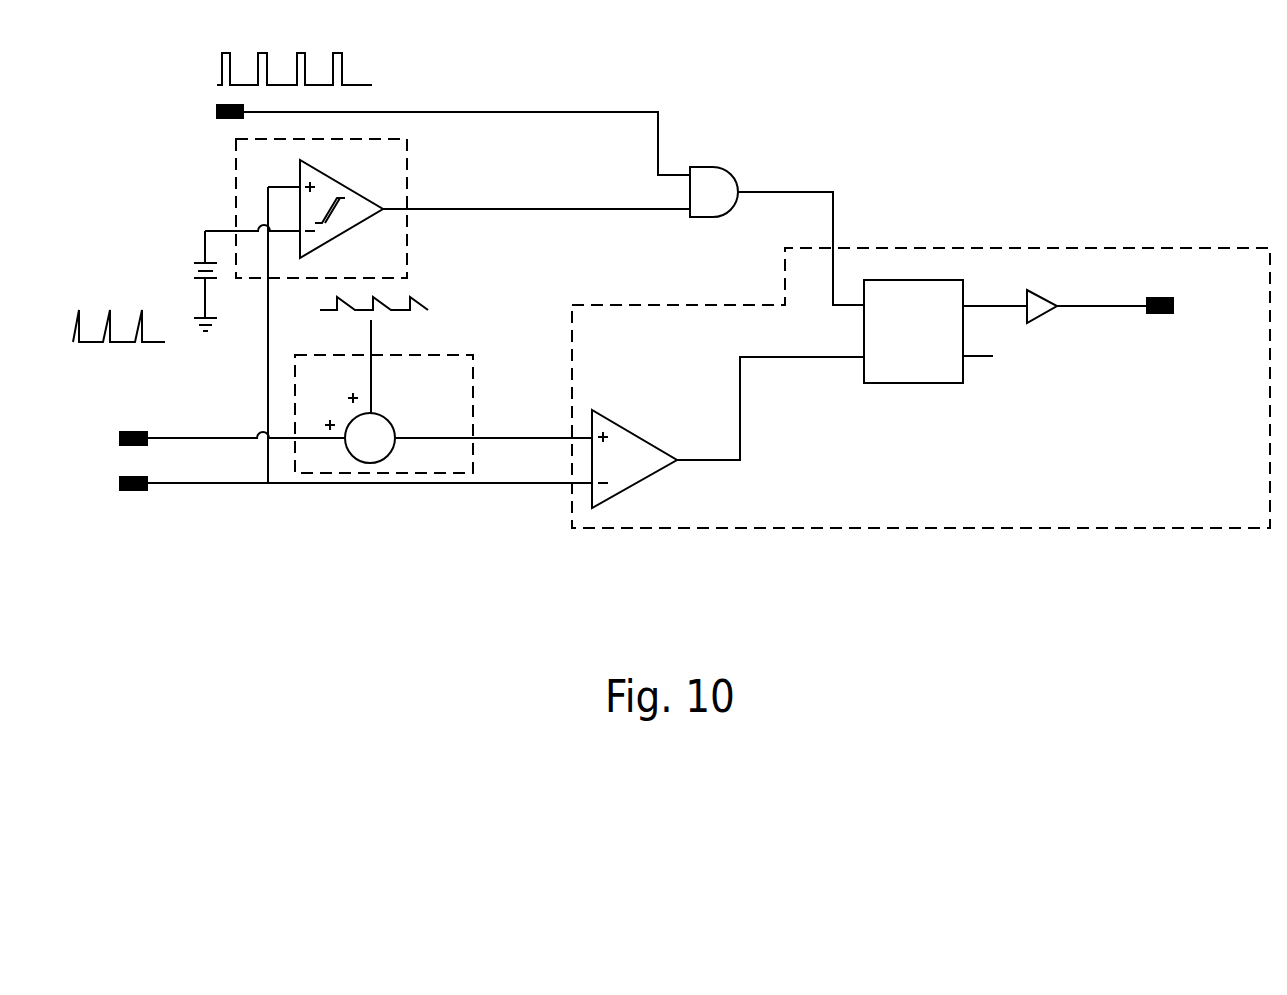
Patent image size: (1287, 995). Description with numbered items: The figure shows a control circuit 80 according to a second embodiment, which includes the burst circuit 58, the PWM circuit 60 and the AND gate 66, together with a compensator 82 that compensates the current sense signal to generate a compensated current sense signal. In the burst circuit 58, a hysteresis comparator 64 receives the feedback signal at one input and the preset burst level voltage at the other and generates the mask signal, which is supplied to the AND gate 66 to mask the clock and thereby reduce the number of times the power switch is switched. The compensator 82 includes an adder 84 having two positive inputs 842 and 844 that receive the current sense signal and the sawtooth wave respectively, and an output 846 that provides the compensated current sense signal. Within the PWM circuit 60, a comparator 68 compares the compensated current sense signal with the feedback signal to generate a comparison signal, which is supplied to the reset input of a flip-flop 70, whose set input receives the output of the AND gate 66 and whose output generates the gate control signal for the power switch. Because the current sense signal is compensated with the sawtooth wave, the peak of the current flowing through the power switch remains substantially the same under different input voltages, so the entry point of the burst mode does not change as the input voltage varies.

The control circuit 80 is at (1200, 99).
The burst circuit 58 is at (236, 172).
The hysteresis comparator 64 is at (345, 182).
The AND gate 66 is at (710, 165).
The PWM circuit 60 is at (1025, 248).
The comparator 68 is at (633, 432).
The flip-flop 70 is at (913, 383).
The compensator 82 is at (462, 353).
The adder 84 is at (390, 452).
The positive input 842 is at (308, 428).
The positive input 844 is at (372, 377).
The output 846 is at (427, 437).